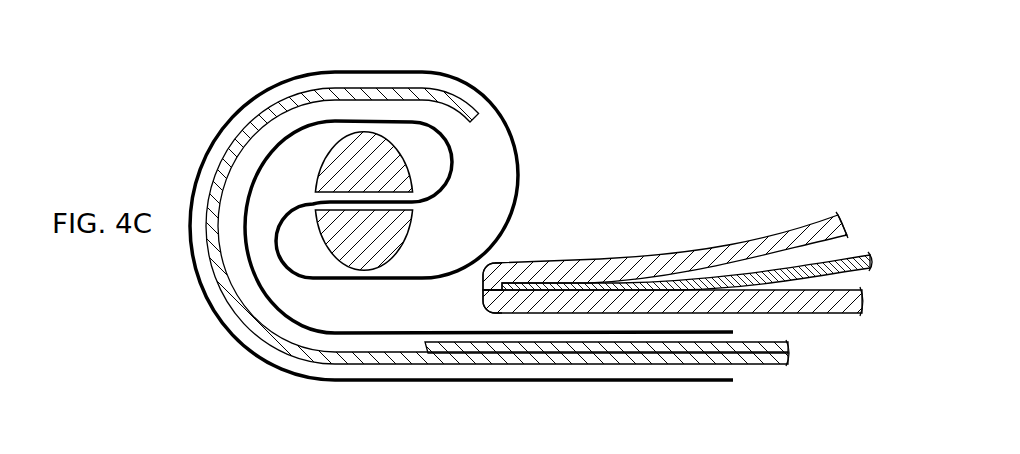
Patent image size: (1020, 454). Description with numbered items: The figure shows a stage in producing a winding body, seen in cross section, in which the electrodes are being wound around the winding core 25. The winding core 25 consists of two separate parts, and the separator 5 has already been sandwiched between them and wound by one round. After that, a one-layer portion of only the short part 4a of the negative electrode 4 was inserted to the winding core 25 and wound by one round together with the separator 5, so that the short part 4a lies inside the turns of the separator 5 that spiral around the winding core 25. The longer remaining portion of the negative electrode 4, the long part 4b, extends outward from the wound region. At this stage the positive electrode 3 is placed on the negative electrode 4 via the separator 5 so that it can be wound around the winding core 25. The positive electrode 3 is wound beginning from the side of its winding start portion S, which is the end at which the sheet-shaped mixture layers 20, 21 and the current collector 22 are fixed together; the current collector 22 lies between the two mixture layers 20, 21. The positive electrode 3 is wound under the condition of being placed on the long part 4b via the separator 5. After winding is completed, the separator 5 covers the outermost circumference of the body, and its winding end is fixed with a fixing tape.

The positive electrode 3 is at (677, 282).
The negative electrode 4 is at (497, 229).
The short part 4a is at (381, 90).
The long part 4b is at (453, 345).
The separator 5 is at (518, 170).
The sheet-shaped mixture layer 20 is at (710, 247).
The sheet-shaped mixture layer 21 is at (843, 300).
The current collector 22 is at (811, 276).
The winding core 25 is at (407, 240).
The winding start portion S is at (511, 262).